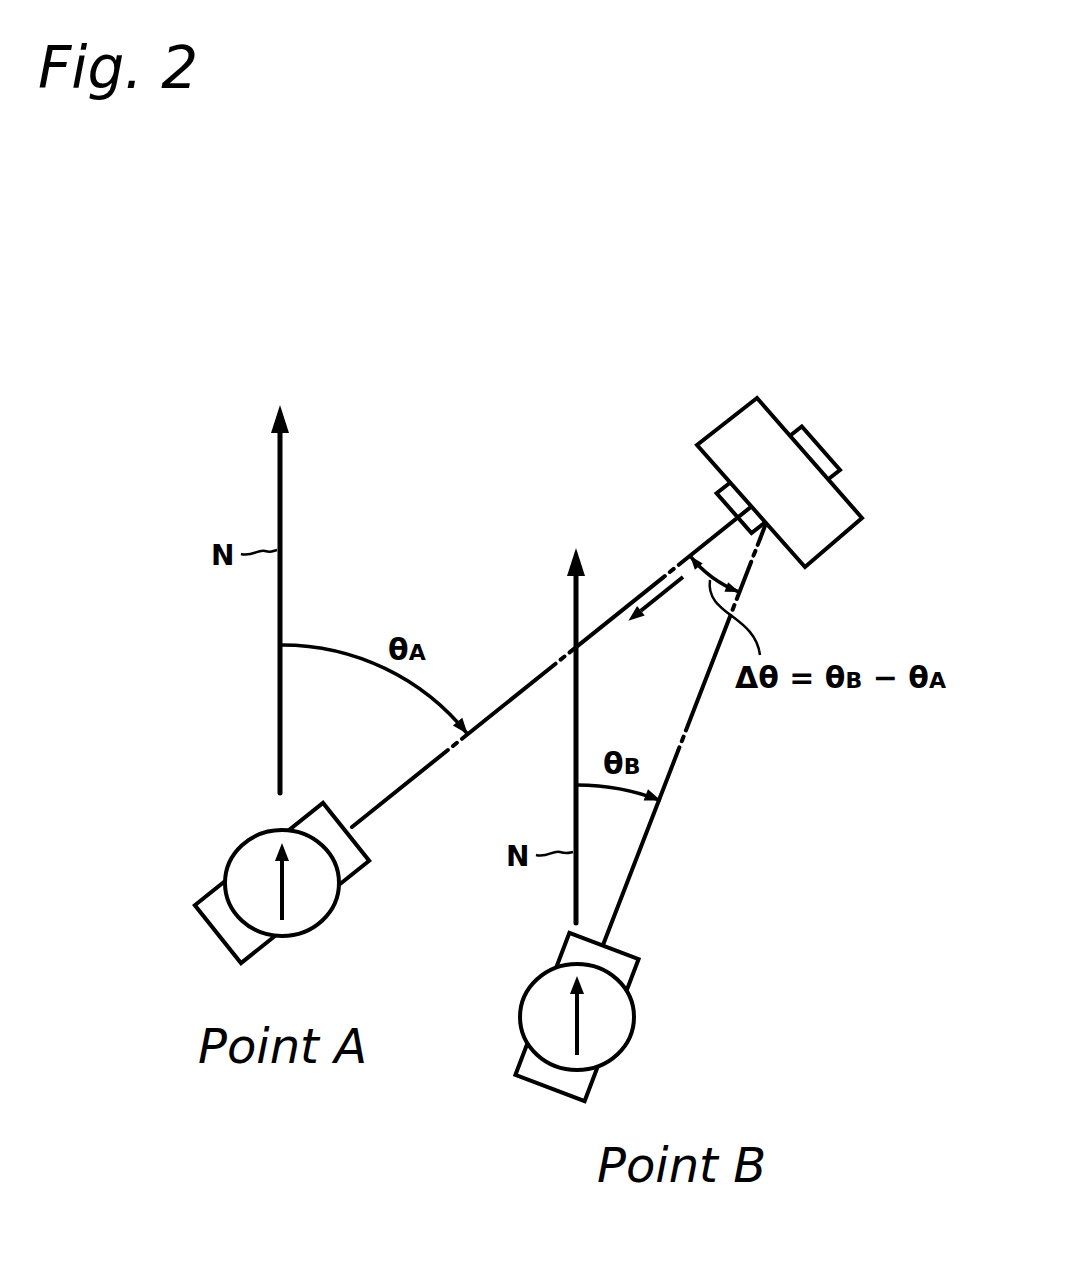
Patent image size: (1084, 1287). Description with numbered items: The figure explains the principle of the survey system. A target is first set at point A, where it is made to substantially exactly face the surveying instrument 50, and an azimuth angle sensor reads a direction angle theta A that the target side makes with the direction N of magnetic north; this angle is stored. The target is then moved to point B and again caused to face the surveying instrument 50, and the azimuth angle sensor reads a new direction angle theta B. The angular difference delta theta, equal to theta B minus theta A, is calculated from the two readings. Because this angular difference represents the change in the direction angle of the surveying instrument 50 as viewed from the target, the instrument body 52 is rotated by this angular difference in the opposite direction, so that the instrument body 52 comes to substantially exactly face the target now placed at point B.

The surveying instrument 50 is at (779, 450).
The instrument body 52 is at (774, 416).